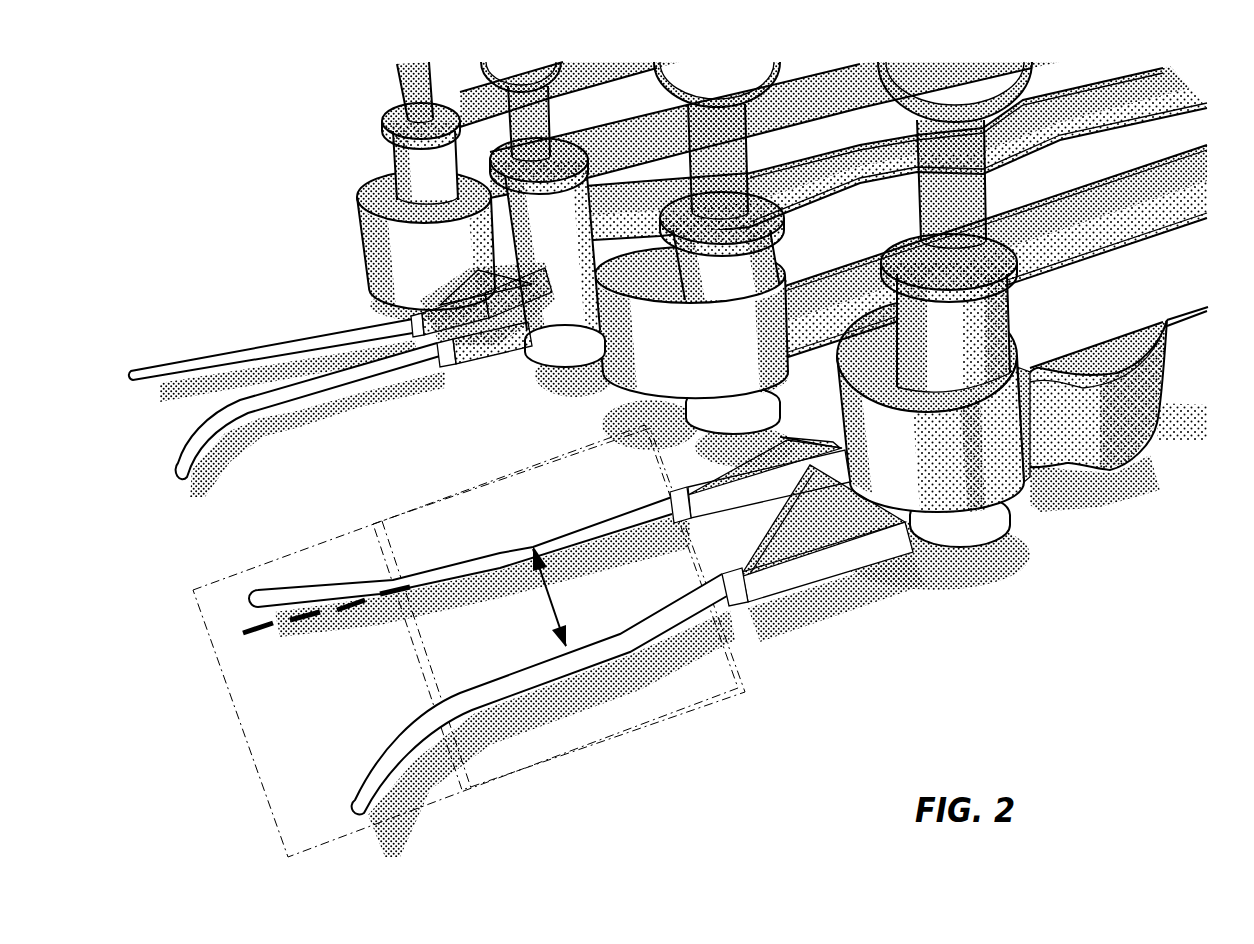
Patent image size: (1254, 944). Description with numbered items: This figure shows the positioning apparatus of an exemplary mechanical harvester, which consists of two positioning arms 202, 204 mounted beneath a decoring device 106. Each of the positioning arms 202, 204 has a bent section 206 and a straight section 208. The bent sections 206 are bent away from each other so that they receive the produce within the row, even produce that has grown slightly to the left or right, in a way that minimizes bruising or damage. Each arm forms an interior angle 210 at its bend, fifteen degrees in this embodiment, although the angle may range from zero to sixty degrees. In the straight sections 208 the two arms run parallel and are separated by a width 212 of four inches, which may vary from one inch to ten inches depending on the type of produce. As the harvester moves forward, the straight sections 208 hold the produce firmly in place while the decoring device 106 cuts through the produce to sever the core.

The decoring device 106 is at (812, 492).
The positioning arm 202 is at (457, 572).
The positioning arm 204 is at (490, 695).
The bent section 206 is at (250, 757).
The straight section 208 is at (667, 720).
The interior angle 210 is at (257, 618).
The width 212 is at (571, 596).